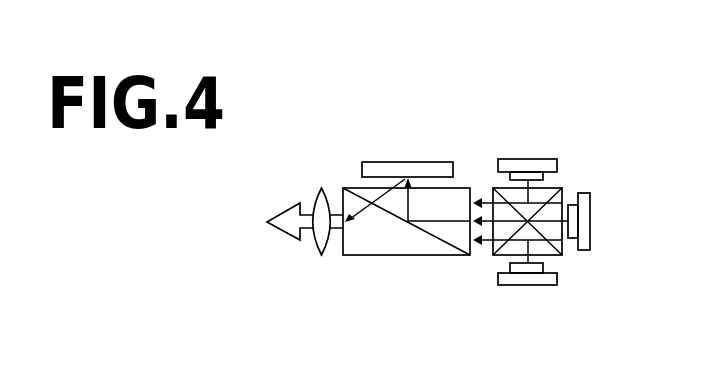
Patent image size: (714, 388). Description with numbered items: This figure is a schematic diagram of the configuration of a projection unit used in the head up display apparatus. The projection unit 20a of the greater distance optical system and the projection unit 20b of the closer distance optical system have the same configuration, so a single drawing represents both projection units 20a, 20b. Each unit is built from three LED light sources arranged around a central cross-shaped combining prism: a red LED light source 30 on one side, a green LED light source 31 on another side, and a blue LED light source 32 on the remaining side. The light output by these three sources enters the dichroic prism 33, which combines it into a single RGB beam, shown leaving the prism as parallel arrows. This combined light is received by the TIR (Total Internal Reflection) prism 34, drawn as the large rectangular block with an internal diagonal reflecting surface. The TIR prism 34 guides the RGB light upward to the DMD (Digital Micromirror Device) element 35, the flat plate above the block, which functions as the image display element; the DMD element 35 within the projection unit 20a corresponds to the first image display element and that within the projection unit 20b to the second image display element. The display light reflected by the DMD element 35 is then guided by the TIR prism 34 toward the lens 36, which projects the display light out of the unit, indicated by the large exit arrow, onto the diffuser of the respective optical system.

The projection unit 20a is at (458, 181).
The projection unit 20b is at (482, 93).
The red (R) LED light source 30 is at (526, 158).
The green (G) LED light source 31 is at (592, 235).
The blue (B) LED light source 32 is at (543, 286).
The dichroic prism 33 is at (563, 192).
The TIR (Total Internal Reflection) prism 34 is at (440, 256).
The DMD (Digital Micromirror Device) element 35 is at (405, 161).
The lens 36 is at (322, 257).